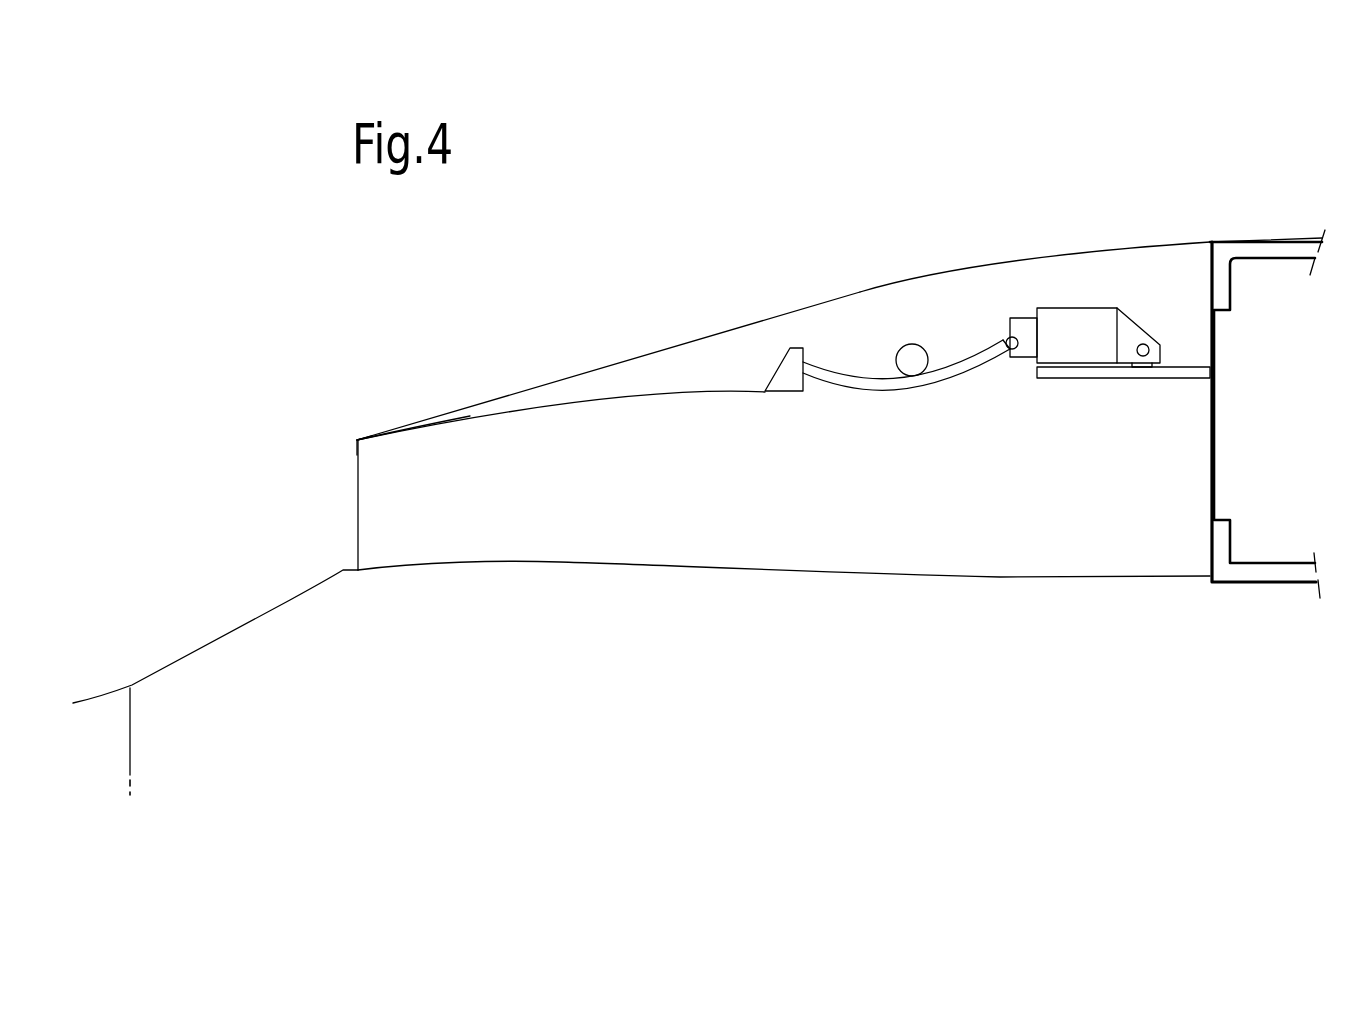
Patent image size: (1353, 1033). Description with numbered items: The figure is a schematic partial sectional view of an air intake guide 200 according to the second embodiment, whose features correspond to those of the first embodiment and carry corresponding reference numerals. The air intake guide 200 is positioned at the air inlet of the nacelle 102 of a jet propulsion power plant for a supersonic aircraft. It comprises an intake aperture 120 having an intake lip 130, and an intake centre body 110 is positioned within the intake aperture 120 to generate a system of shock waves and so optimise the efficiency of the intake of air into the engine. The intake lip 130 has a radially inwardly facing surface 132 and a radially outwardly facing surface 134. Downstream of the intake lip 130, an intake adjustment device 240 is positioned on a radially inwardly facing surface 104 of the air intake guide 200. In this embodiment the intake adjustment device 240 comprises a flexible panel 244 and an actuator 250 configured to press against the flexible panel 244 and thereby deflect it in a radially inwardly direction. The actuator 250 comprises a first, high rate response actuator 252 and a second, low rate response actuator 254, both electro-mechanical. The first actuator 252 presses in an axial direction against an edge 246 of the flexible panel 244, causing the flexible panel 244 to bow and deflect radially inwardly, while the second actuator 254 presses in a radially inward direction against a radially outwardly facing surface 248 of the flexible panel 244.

The nacelle 102 is at (1250, 240).
The radially inwardly facing surface 104 is at (505, 412).
The intake centre body 110 is at (247, 623).
The intake aperture 120 is at (333, 512).
The intake lip 130 is at (355, 440).
The radially inwardly facing surface 132 is at (460, 420).
The radially outwardly facing surface 134 is at (440, 413).
The air intake guide 200 is at (346, 309).
The intake adjustment device 240 is at (1040, 430).
The flexible panel 244 is at (865, 388).
The edge 246 is at (1008, 350).
The radially outwardly facing surface 248 is at (833, 377).
The actuator 250 is at (1005, 280).
The first, high rate response actuator 252 is at (1093, 317).
The second, low rate response actuator 254 is at (909, 358).